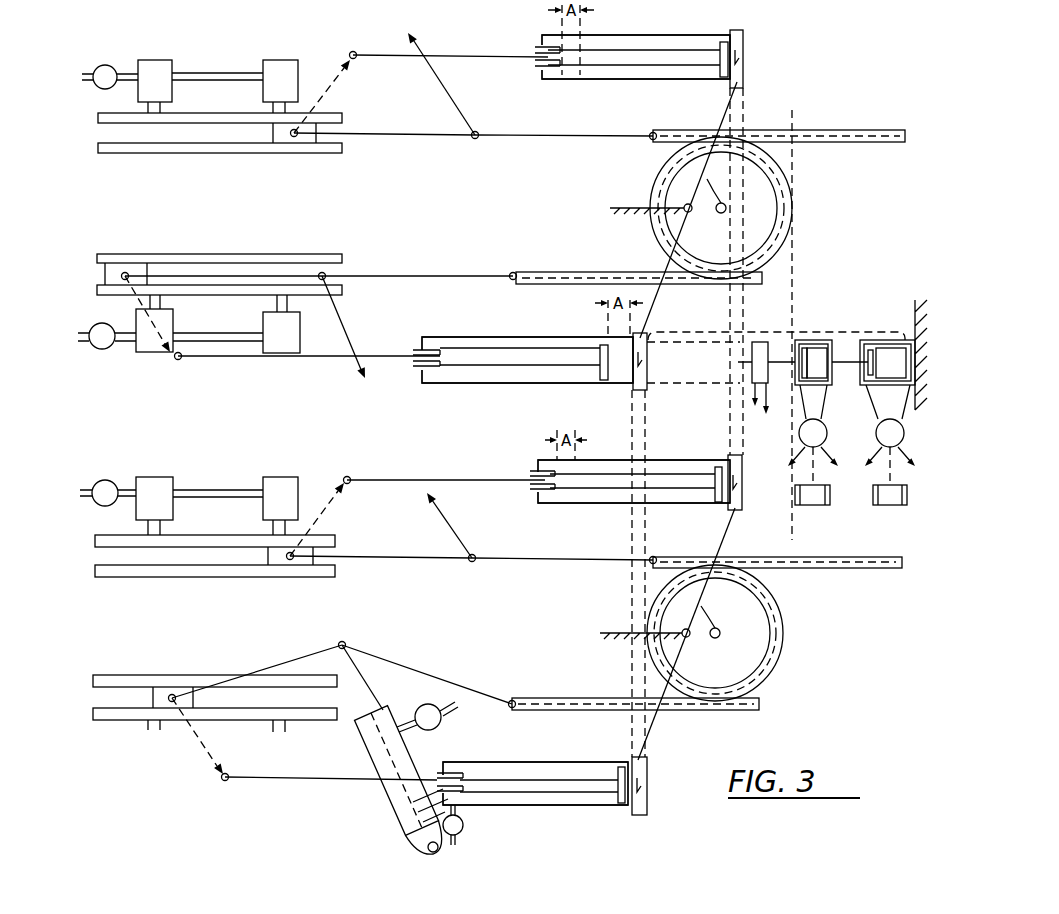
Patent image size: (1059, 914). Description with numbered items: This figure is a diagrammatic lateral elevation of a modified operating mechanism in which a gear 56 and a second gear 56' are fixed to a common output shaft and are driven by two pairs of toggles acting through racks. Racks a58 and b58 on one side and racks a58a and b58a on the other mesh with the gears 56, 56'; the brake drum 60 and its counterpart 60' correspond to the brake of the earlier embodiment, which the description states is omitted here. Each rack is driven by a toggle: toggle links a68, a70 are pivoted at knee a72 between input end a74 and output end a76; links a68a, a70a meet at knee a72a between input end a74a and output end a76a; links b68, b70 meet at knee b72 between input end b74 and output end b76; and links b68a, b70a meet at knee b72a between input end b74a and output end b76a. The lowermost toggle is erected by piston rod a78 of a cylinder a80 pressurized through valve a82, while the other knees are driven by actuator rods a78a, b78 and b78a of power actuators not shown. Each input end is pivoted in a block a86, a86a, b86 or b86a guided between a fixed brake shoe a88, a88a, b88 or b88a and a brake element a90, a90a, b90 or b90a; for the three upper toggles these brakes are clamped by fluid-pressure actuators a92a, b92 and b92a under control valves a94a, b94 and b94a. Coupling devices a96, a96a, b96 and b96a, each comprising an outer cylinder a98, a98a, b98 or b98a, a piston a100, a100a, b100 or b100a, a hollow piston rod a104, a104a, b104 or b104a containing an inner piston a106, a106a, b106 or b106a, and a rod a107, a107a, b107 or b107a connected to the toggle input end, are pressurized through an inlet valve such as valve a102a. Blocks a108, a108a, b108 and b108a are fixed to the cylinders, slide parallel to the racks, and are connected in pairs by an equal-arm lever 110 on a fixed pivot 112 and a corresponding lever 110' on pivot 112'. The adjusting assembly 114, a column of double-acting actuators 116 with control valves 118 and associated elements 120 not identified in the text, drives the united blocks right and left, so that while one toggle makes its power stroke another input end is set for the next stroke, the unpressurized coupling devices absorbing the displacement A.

The control valve b94a is at (120, 48).
The fluid-pressure actuator b92a is at (172, 72).
The brake element b90a is at (242, 100).
The fixed brake shoe b88a is at (203, 154).
The block b86a is at (274, 154).
The input end of toggle b74a is at (294, 136).
The rod b107a is at (495, 56).
The actuator rod b78a is at (450, 100).
The toggle link b70a is at (374, 135).
The knee b72a is at (498, 166).
The toggle link b68a is at (543, 136).
The output end of toggle b76a is at (650, 134).
The coupling device b96a is at (562, 90).
The outer fluid-pressure cylinder b98a is at (658, 34).
The hollow piston rod b104a is at (646, 78).
The piston b106a is at (570, 46).
The piston b100a is at (728, 54).
The block b108a is at (745, 82).
The rack b58a is at (890, 130).
The gear 56' is at (754, 208).
The brake drum 60' is at (755, 208).
The equal-arm lever 110' is at (669, 192).
The fixed pivot 112' is at (668, 225).
The fixed brake shoe b88 is at (115, 254).
The brake element b90 is at (122, 294).
The block b86 is at (154, 268).
The input end of toggle b74 is at (127, 272).
The toggle link b70 is at (250, 272).
The knee b72 is at (323, 272).
The toggle link b68 is at (400, 276).
The output end of toggle b76 is at (510, 274).
The rack b58 is at (640, 271).
The fluid-pressure actuator b92 is at (263, 322).
The control valve b94 is at (106, 350).
The rod b107 is at (242, 358).
The actuator rod b78 is at (344, 328).
The coupling device b96 is at (474, 384).
The outer fluid-pressure cylinder b98 is at (516, 336).
The hollow piston rod b104 is at (538, 368).
The piston b106 is at (434, 346).
The piston b100 is at (602, 376).
The block b108 is at (648, 364).
The double-acting fluid-pressure actuator 116 is at (770, 344).
The adjusting assembly 114 is at (806, 340).
The control valve 118 is at (878, 436).
The block 120 is at (880, 504).
The control valve a94a is at (122, 458).
The fluid-pressure actuator a92a is at (172, 484).
The brake element a90a is at (181, 535).
The fixed brake shoe a88a is at (148, 577).
The block a86a is at (270, 570).
The input end of toggle a74a is at (293, 559).
The rod a107a is at (500, 478).
The actuator rod a78a is at (450, 527).
The toggle link a70a is at (412, 534).
The knee a72a is at (473, 561).
The toggle link a68a is at (541, 558).
The output end of toggle a76a is at (655, 558).
The coupling device a96a is at (664, 454).
The outer fluid-pressure cylinder a98a is at (669, 454).
The hollow piston rod a104a is at (577, 463).
The piston a106a is at (578, 492).
The piston a100a is at (720, 470).
The block a108a is at (729, 522).
The rack a58a is at (866, 569).
The gear 56 is at (734, 633).
The brake drum 60 is at (743, 633).
The equal-arm lever 110 is at (739, 622).
The fixed pivot 112 is at (675, 650).
The fixed brake shoe a88 is at (192, 673).
The brake element a90 is at (314, 720).
The block a86 is at (154, 687).
The input end of toggle a74 is at (168, 699).
The toggle link a70 is at (285, 666).
The knee a72 is at (342, 642).
The toggle link a68 is at (438, 678).
The output end of toggle a76 is at (511, 702).
The rack a58 is at (682, 714).
The piston rod a78 is at (366, 688).
The cylinder a80 is at (398, 804).
The valve a82 is at (426, 704).
The fluid-pressure inlet valve a102a is at (463, 829).
The rod a107 is at (343, 780).
The coupling device a96 is at (556, 826).
The outer fluid-pressure cylinder a98 is at (599, 760).
The hollow piston rod a104 is at (540, 778).
The piston a106 is at (473, 772).
The piston a100 is at (616, 802).
The block a108 is at (645, 814).